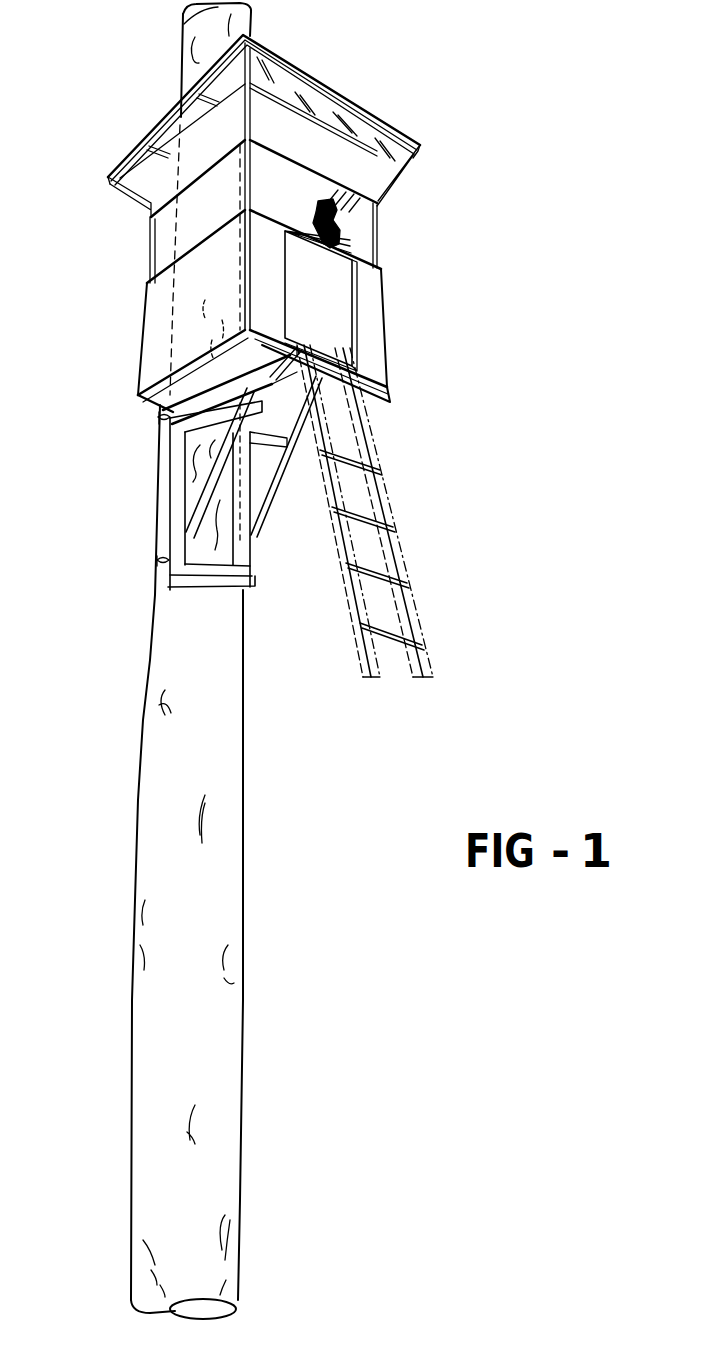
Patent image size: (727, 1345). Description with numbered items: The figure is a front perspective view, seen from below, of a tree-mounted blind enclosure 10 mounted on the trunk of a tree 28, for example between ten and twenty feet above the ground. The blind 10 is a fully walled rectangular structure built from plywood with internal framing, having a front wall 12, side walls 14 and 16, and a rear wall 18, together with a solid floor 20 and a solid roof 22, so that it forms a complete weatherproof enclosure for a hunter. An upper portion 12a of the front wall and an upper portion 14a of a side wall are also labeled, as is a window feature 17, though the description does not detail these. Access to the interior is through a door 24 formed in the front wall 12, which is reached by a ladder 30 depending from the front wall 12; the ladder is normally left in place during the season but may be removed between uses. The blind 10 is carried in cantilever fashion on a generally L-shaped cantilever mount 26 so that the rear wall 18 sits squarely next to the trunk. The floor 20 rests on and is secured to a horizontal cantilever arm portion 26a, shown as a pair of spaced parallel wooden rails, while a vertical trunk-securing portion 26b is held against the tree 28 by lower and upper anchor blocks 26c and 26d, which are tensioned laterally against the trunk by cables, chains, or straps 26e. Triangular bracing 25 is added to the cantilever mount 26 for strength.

The tree-mounted blind enclosure 10 is at (487, 190).
The front wall 12 is at (372, 310).
The upper side wall portion 12a is at (362, 227).
The side wall 14 is at (153, 328).
The upper side wall portion 14a is at (190, 237).
The side wall 16 is at (375, 395).
The window shade 17 is at (342, 237).
The rear wall 18 is at (147, 400).
The floor 20 is at (152, 408).
The roof 22 is at (327, 80).
The door 24 is at (335, 287).
The triangular bracing 25 is at (260, 500).
The cantilever mount 26 is at (280, 570).
The horizontal cantilever arm portion 26a is at (300, 455).
The vertical trunk-securing portion 26b is at (175, 508).
The lower anchor block 26c is at (233, 592).
The upper anchor block 26d is at (173, 463).
The straps 26e is at (165, 422).
The tree 28 is at (200, 47).
The ladder 30 is at (400, 553).